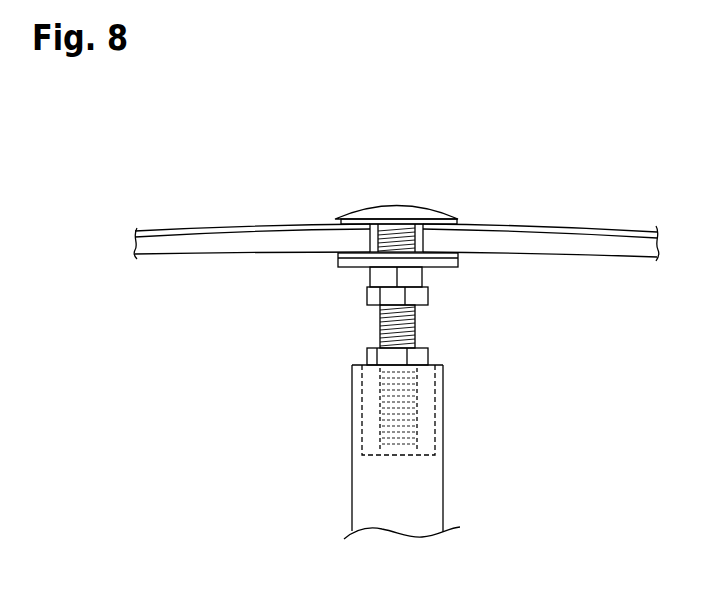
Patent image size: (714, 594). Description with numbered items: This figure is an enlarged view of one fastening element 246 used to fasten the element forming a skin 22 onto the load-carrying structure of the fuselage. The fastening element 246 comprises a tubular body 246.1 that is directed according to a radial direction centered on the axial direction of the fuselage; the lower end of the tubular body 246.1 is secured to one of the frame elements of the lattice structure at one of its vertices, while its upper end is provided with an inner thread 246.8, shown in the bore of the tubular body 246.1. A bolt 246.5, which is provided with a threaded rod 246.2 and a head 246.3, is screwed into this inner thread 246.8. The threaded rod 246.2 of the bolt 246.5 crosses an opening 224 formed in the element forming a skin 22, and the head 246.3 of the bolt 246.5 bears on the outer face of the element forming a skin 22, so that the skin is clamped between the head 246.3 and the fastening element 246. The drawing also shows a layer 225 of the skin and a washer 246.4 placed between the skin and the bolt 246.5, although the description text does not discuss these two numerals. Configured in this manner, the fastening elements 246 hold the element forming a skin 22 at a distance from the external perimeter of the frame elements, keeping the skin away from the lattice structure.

The element forming a skin 22 is at (346, 210).
The opening 224 is at (425, 243).
The top layer of plate 225 is at (593, 234).
The fastening element 246 is at (527, 448).
The tubular body 246.1 is at (444, 482).
The threaded rod 246.2 is at (416, 320).
The head 246.3 is at (371, 206).
The washer 246.4 is at (338, 264).
The bolt 246.5 is at (428, 293).
The inner thread 246.8 is at (418, 408).